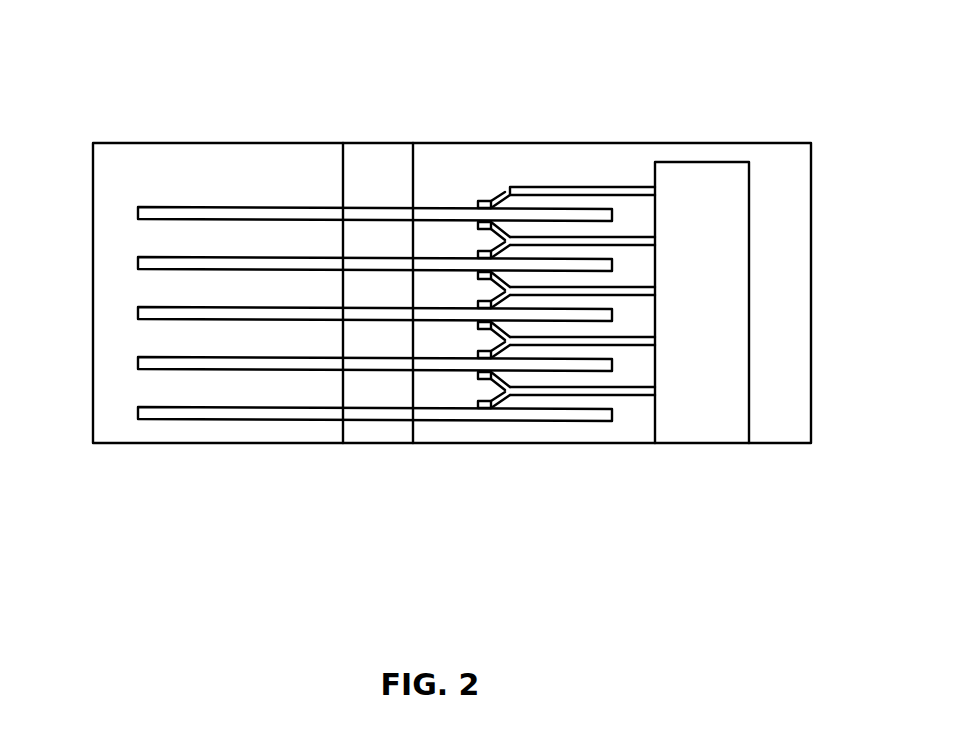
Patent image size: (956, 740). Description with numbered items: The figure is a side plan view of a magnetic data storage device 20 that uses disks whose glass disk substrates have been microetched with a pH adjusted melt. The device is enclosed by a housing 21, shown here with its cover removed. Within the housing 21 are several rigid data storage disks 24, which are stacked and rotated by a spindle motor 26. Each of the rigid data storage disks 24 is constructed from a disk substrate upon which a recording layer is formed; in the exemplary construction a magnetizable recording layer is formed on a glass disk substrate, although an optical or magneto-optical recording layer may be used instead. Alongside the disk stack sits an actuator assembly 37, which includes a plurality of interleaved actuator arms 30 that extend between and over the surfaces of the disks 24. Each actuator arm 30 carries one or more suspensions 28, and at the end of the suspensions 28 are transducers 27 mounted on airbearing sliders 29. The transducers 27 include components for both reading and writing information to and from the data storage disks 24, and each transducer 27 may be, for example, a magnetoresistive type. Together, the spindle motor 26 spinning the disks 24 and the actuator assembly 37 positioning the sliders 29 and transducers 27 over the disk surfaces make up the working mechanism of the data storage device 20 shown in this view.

The magnetic data storage device 20 is at (704, 120).
The housing 21 is at (812, 333).
The rigid data storage disks 24 is at (138, 212).
The spindle motor 26 is at (369, 444).
The transducers 27 is at (480, 224).
The suspensions 28 is at (492, 201).
The airbearing sliders 29 is at (489, 201).
The actuator arms 30 is at (567, 187).
The actuator assembly 37 is at (698, 418).